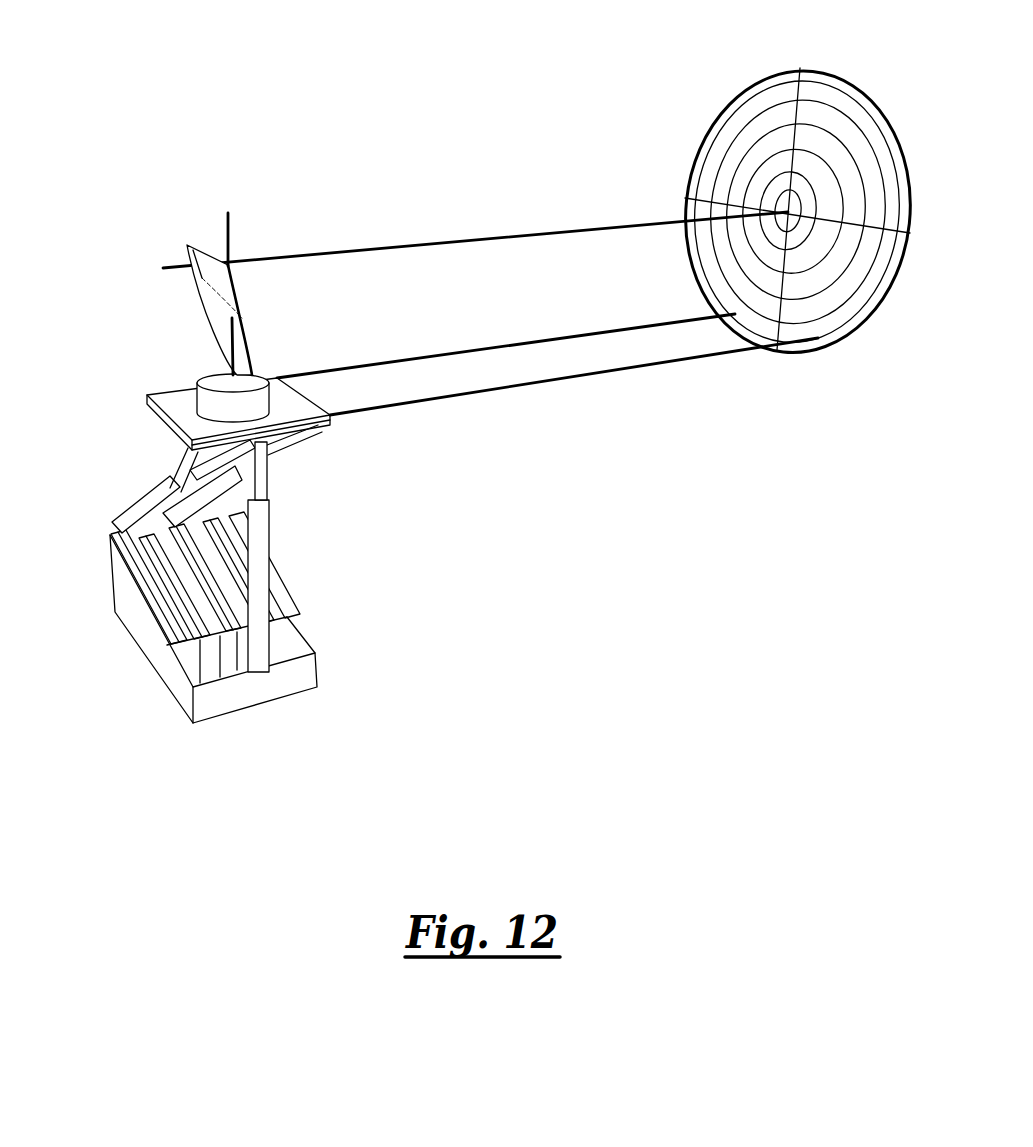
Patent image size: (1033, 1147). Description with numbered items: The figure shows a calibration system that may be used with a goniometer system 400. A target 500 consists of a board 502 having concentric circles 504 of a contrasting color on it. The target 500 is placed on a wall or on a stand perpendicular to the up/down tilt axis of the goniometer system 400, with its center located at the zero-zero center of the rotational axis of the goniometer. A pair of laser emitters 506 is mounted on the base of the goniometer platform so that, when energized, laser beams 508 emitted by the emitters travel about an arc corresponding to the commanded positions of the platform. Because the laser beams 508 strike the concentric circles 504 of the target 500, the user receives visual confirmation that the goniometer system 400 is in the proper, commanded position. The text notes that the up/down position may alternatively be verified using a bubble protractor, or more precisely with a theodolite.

The goniometer system 400 is at (88, 533).
The target 500 is at (728, 43).
The board 502 is at (882, 297).
The concentric circles 504 is at (855, 85).
The laser emitters 506 is at (147, 396).
The laser beams 508 is at (567, 335).